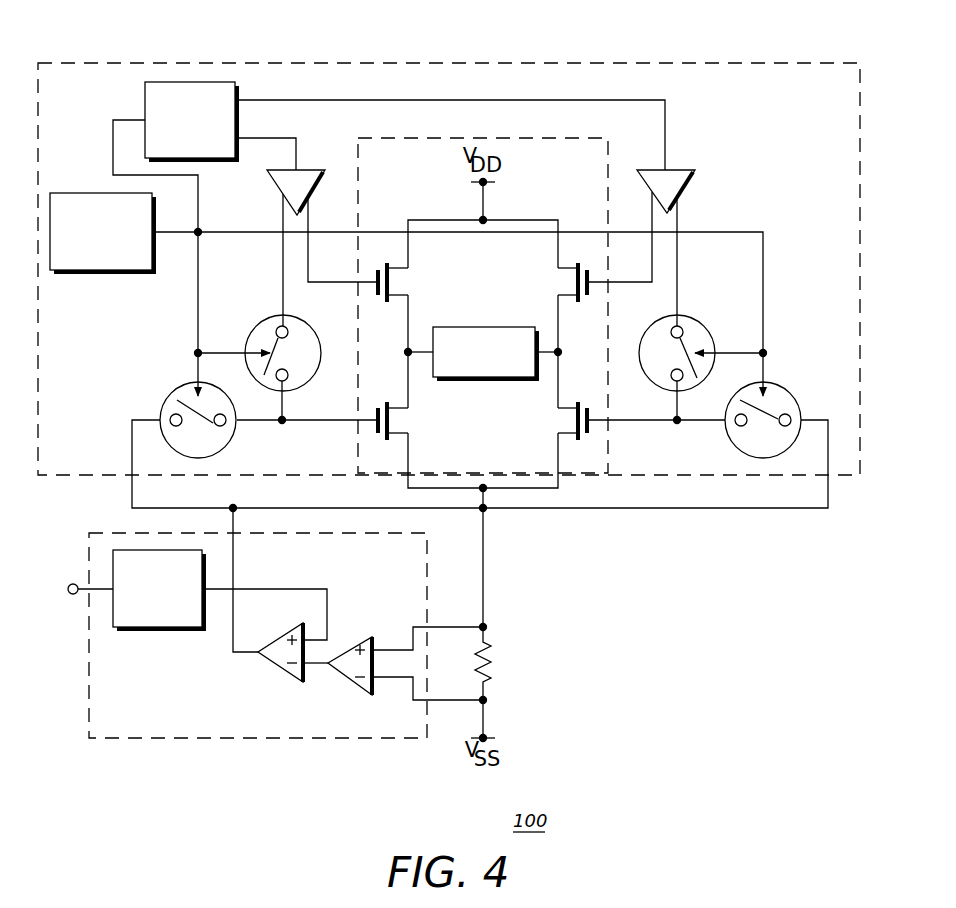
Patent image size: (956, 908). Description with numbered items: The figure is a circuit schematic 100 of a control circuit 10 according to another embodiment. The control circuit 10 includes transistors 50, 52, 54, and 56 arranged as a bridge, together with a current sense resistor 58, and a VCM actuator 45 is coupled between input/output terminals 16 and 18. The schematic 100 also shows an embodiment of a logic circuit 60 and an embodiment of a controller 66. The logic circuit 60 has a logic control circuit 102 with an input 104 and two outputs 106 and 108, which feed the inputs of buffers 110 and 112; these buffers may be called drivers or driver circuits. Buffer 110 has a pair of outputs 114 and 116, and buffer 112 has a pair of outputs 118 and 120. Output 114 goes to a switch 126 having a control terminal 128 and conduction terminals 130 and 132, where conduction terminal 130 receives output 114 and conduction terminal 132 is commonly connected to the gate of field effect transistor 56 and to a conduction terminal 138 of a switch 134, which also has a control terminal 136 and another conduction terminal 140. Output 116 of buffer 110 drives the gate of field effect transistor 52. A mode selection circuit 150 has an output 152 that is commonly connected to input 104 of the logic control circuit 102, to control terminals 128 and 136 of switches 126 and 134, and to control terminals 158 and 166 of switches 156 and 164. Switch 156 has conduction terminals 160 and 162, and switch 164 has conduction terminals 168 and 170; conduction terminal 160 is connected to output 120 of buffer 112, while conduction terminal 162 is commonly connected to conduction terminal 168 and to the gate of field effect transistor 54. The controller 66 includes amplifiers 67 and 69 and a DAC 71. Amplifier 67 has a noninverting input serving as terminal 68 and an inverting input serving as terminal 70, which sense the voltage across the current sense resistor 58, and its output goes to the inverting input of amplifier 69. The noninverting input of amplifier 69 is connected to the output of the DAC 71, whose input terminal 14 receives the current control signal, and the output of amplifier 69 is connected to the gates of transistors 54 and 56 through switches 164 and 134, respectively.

The control circuit 10 is at (758, 48).
The current control input terminal 14 is at (69, 582).
The input/output terminal 16 is at (548, 350).
The input/output terminal 18 is at (418, 350).
The VCM actuator 45 is at (480, 380).
The transistor 50 is at (400, 283).
The transistor 52 is at (560, 283).
The transistor 54 is at (400, 420).
The transistor 56 is at (562, 420).
The current sense resistor 58 is at (490, 648).
The logic circuit 60 is at (178, 63).
The controller 66 is at (125, 740).
The amplifier 67 is at (350, 684).
The terminal 68 is at (397, 648).
The amplifier 69 is at (276, 668).
The terminal 70 is at (398, 680).
The DAC 71 is at (157, 630).
The circuit schematic 100 is at (483, 305).
The logic control circuit 102 is at (205, 160).
The input 104 is at (130, 120).
The output 106 is at (258, 100).
The output 108 is at (258, 138).
The buffer 110 is at (688, 181).
The buffer 112 is at (318, 180).
The output 114 is at (682, 221).
The output 116 is at (652, 218).
The output 118 is at (308, 272).
The output 120 is at (283, 216).
The switch 126 is at (700, 320).
The control terminal 128 is at (740, 351).
The conduction terminal 130 is at (680, 303).
The conduction terminal 132 is at (673, 405).
The switch 134 is at (790, 390).
The control terminal 136 is at (766, 372).
The conduction terminal 138 is at (707, 422).
The conduction terminal 140 is at (812, 418).
The mode selection circuit 150 is at (103, 272).
The output 152 is at (178, 234).
The switch 156 is at (318, 333).
The control terminal 158 is at (225, 351).
The conduction terminal 160 is at (283, 308).
The conduction terminal 162 is at (286, 404).
The switch 164 is at (170, 392).
The control terminal 166 is at (194, 374).
The conduction terminal 168 is at (252, 422).
The conduction terminal 170 is at (144, 420).